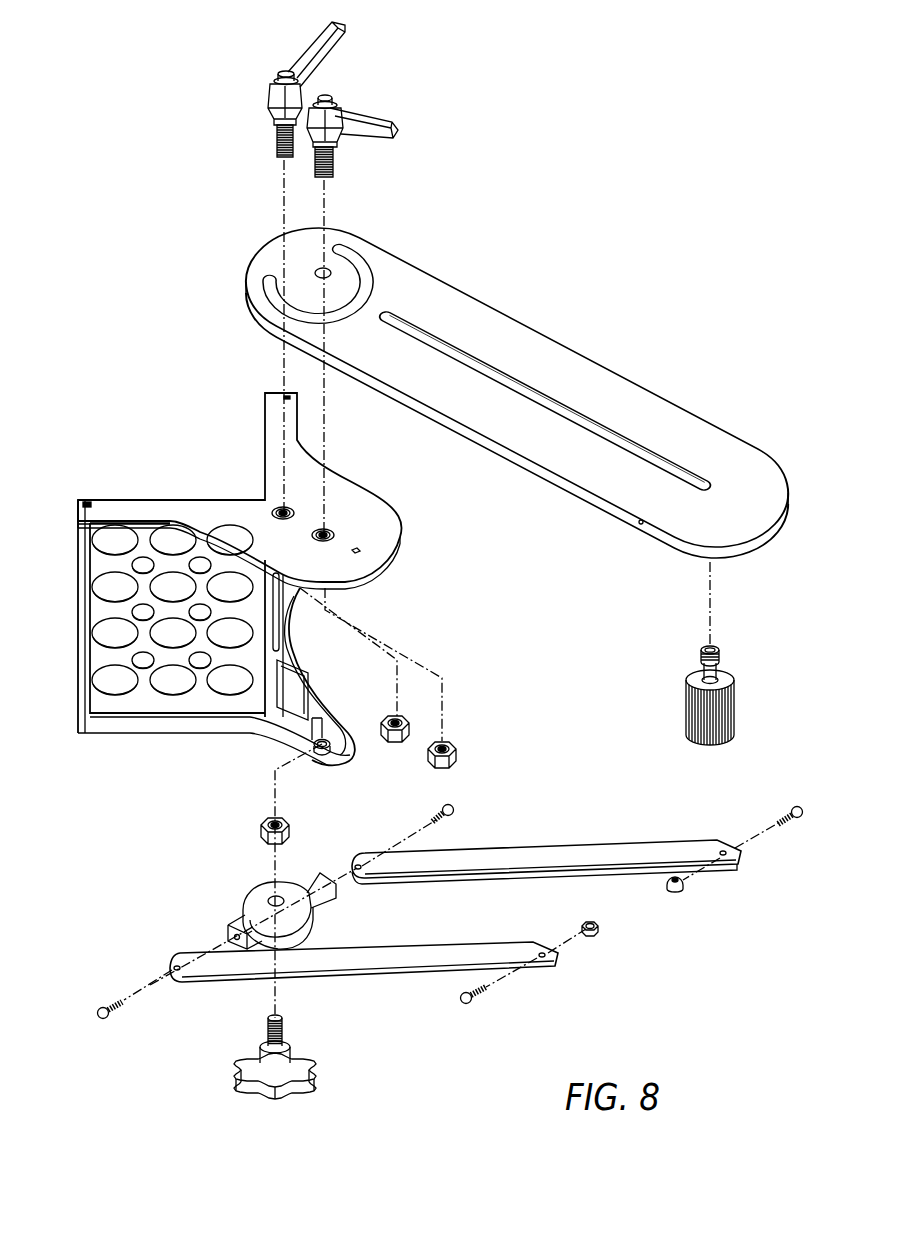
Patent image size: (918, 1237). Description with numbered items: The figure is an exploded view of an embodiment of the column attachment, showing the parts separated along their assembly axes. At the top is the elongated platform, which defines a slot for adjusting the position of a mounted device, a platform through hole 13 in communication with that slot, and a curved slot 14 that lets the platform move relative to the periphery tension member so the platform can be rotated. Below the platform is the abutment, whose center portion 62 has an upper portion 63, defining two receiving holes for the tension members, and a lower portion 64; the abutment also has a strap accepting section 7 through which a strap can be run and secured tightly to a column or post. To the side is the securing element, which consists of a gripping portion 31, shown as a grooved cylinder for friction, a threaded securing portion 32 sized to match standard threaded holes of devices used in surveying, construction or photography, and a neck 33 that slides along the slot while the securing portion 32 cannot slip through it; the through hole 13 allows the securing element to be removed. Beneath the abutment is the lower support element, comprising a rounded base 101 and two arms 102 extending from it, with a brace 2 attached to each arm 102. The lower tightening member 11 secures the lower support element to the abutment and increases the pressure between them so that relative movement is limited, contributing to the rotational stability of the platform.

The curved slot 14 is at (338, 243).
The platform through hole 13 is at (713, 492).
The upper portion 63 is at (400, 556).
The center portion 62 is at (300, 638).
The strap accepting section 7 is at (273, 628).
The lower portion 64 is at (350, 752).
The securing portion 32 is at (722, 660).
The neck 33 is at (722, 680).
The gripping portion 31 is at (735, 710).
The base 101 is at (254, 898).
The arm 102 is at (325, 928).
The brace 2 is at (465, 945).
The lower tightening member 11 is at (313, 1083).